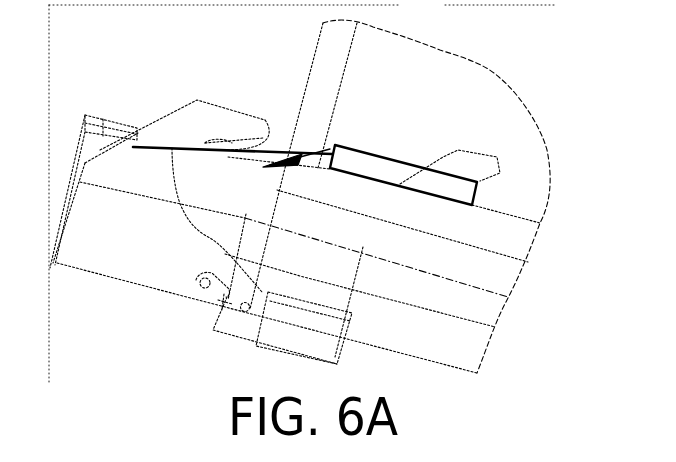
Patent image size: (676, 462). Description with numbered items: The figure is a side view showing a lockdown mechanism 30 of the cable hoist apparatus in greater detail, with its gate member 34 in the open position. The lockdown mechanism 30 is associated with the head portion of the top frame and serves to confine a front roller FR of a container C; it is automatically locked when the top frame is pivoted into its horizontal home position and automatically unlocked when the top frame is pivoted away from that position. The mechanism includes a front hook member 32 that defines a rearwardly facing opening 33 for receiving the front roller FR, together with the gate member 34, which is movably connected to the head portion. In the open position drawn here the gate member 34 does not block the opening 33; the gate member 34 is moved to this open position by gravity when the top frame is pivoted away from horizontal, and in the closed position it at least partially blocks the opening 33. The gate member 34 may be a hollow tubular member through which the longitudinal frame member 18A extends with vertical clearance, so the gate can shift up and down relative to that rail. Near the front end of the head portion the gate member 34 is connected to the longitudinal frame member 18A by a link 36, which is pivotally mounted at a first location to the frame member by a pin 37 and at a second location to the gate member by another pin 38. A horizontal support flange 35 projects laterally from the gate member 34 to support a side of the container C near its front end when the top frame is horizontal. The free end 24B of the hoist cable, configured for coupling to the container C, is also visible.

The longitudinal side rail 18A is at (130, 263).
The free end of hoist cable 24B is at (367, 152).
The lockdown mechanism 30 is at (181, 315).
The front hook member 32 is at (256, 118).
The rearwardly facing opening 33 is at (307, 150).
The gate member 34 is at (338, 364).
The horizontal support flange 35 is at (317, 313).
The link 36 is at (225, 297).
The pin 37 is at (200, 283).
The pin 38 is at (250, 312).
The container C is at (367, 290).
The front roller FR is at (220, 150).